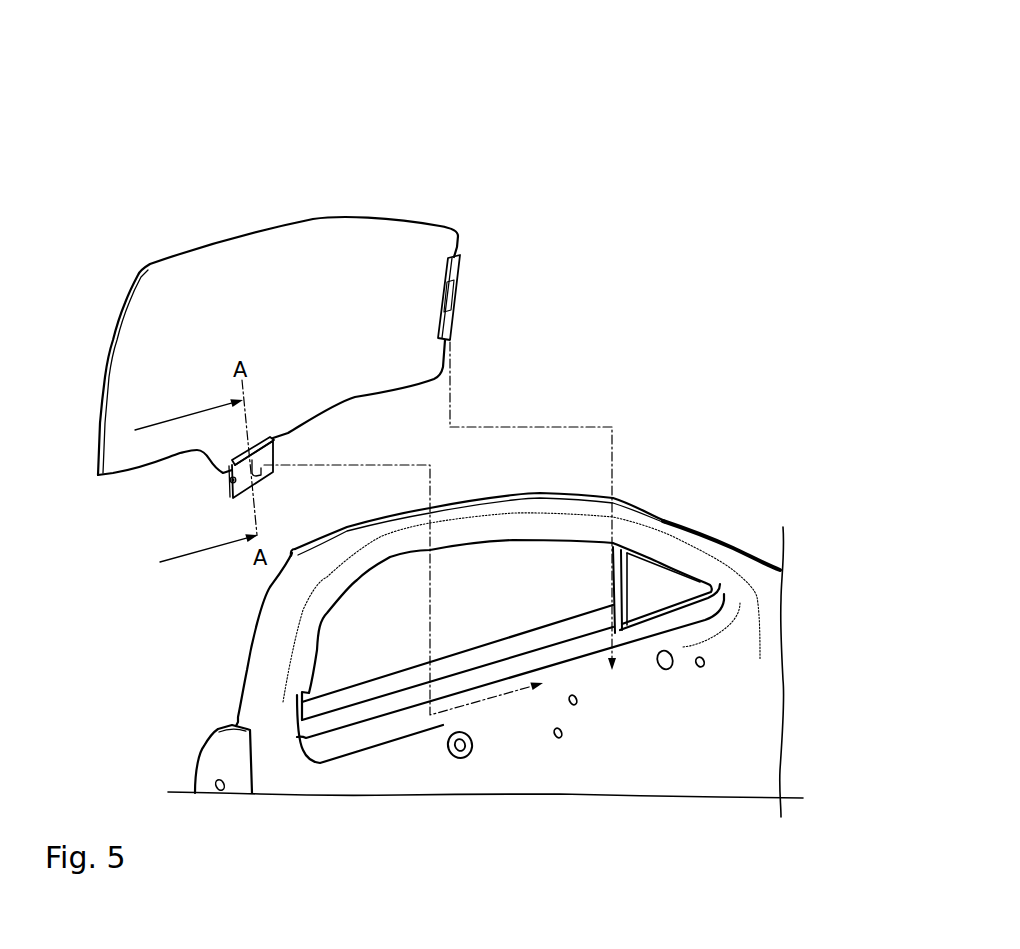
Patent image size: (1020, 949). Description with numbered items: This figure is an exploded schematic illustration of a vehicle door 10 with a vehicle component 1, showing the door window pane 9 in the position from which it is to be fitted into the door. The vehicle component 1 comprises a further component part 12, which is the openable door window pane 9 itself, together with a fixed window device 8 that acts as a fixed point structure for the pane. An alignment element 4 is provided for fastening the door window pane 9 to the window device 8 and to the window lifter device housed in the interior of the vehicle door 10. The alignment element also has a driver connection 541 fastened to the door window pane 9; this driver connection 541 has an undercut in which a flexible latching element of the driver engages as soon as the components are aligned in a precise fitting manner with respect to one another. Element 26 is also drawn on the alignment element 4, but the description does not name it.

The vehicle component 1 is at (232, 64).
The alignment element 4 is at (217, 504).
The fixed window device 8 is at (647, 577).
The door window pane 9 is at (290, 256).
The vehicle door 10 is at (697, 527).
The further component part 12 is at (378, 204).
The hook element 26 is at (260, 464).
The driver connection 541 is at (230, 481).